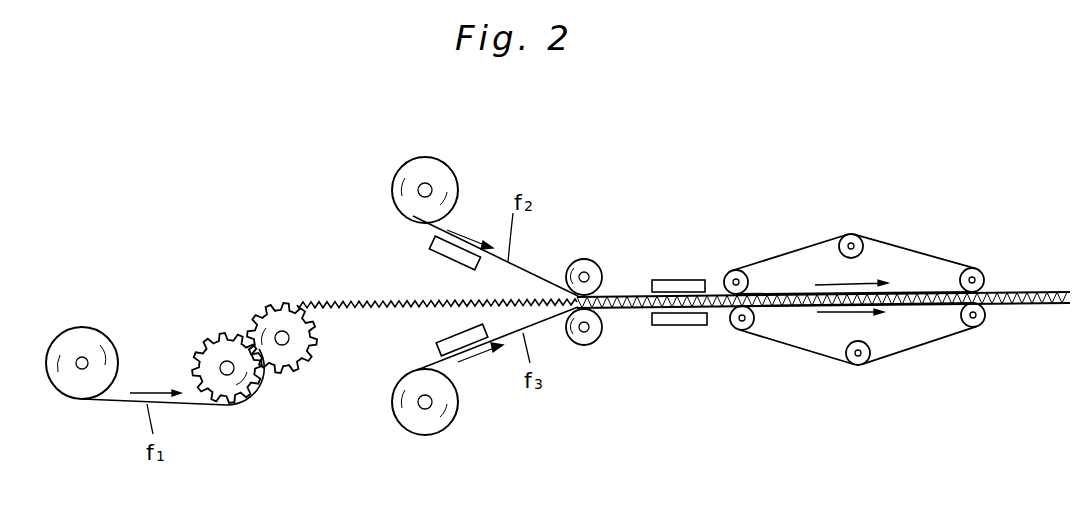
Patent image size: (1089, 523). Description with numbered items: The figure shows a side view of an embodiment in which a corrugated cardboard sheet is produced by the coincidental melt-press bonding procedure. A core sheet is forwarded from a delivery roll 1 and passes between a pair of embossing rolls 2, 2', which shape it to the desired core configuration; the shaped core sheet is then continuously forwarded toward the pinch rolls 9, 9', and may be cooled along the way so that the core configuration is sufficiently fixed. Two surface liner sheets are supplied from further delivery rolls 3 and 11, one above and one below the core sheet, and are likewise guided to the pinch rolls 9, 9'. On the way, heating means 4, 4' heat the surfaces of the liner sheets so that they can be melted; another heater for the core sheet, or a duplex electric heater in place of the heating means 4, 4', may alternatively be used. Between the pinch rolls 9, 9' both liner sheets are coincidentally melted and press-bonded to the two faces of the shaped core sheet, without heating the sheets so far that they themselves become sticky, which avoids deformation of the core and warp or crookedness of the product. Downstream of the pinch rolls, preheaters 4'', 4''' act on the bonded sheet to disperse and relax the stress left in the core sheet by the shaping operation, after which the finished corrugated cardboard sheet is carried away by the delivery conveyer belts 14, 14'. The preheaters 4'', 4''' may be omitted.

The delivery roll 1 is at (83, 352).
The embossing roll 2 is at (227, 339).
The embossing roll 2' is at (282, 361).
The delivery roll 3 is at (428, 183).
The heating means 4 is at (434, 250).
The heating means 4' is at (436, 344).
The preheater 4'' is at (679, 344).
The preheater 4''' is at (678, 260).
The pinch roll 9 is at (584, 251).
The pinch roll 9' is at (588, 353).
The delivery roll 11 is at (425, 410).
The delivery conveyer belt 14 is at (854, 243).
The delivery conveyer belt 14' is at (857, 357).